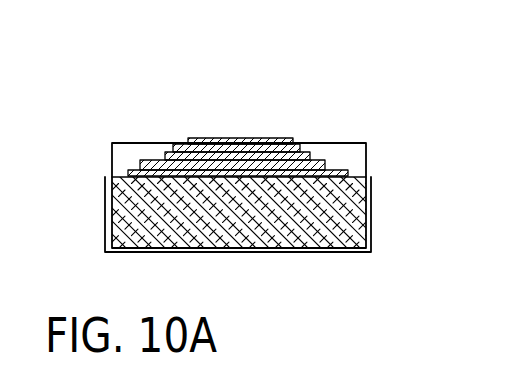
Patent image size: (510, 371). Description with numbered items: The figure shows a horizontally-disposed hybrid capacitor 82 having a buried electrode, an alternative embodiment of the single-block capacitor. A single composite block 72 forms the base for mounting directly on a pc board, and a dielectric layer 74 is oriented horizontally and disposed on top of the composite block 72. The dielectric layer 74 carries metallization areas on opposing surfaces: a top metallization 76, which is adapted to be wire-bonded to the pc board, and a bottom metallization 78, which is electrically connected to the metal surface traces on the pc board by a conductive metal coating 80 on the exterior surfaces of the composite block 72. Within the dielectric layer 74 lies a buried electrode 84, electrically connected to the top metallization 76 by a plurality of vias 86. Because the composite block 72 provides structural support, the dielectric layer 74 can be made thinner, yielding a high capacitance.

The composite block 72 is at (368, 203).
The dielectric layer 74 is at (366, 148).
The top metallization 76 is at (207, 138).
The bottom metallization 78 is at (130, 150).
The conductive metal coating 80 is at (105, 218).
The capacitor 82 is at (296, 85).
The buried electrode 84 is at (325, 148).
The vias 86 is at (175, 150).